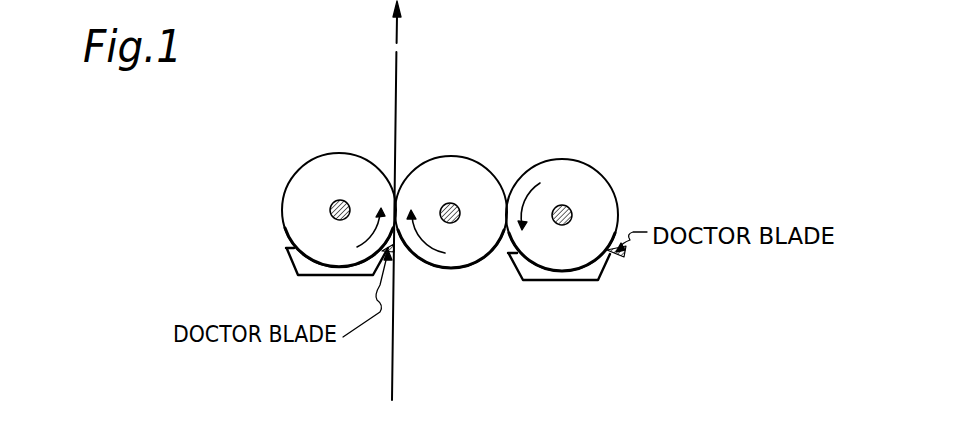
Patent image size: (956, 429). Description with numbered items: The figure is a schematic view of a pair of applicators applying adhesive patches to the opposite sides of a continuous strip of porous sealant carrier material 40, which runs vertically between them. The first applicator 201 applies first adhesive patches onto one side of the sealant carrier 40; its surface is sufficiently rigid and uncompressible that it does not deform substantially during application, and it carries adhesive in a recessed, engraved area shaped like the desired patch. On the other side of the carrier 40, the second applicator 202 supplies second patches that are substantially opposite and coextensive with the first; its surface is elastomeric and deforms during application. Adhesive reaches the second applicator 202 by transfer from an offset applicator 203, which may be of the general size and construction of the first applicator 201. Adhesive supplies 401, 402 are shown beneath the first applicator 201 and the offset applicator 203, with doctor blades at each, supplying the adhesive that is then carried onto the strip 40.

The first applicator 201 is at (322, 148).
The second applicator 202 is at (445, 150).
The offset applicator 203 is at (635, 182).
The adhesive supply 401 is at (284, 269).
The adhesive supply 402 is at (580, 286).
The continuous strip of sealant carrier 40 is at (401, 348).